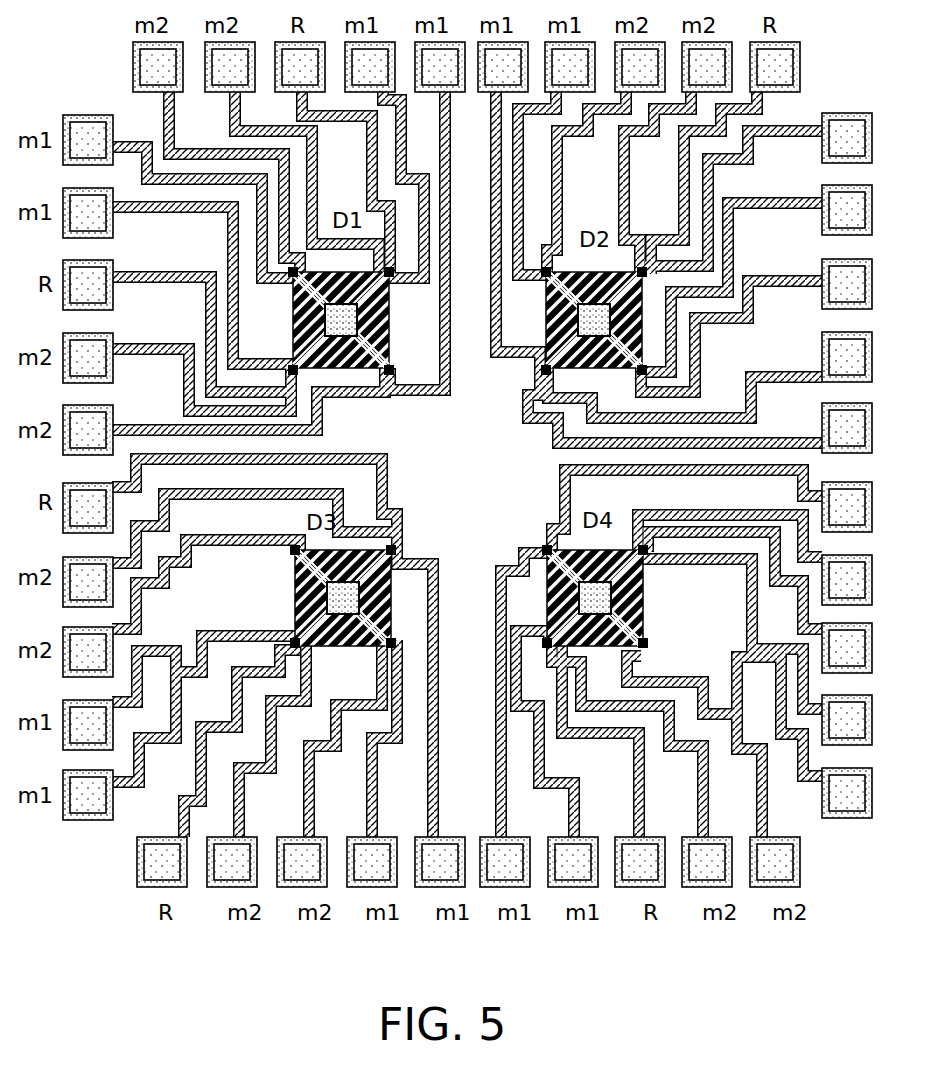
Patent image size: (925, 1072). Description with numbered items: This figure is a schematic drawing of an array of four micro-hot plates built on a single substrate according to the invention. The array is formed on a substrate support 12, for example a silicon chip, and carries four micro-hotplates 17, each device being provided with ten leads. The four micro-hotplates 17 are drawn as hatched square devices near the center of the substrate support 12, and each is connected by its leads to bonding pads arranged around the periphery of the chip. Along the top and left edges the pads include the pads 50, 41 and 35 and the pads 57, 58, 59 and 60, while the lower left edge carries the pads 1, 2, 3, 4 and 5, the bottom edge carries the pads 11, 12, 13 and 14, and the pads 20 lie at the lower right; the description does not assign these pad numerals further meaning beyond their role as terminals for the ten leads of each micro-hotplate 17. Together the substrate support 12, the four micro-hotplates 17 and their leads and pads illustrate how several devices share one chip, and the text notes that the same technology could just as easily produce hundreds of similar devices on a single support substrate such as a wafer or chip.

The bonding pads 50 is at (123, 107).
The bonding pad 41 is at (790, 67).
The bonding pad 35 is at (831, 138).
The bonding pad 57 is at (103, 215).
The bonding pad 58 is at (103, 285).
The bonding pad 59 is at (103, 358).
The bonding pad 60 is at (103, 428).
The bonding pad 1 is at (96, 508).
The bonding pad 2 is at (96, 582).
The bonding pad 3 is at (96, 652).
The bonding pad 4 is at (96, 725).
The bonding pad 5 is at (96, 795).
The bonding pad 11 is at (162, 849).
The substrate support 12 is at (484, 509).
The bonding pad 13 is at (309, 849).
The bonding pad 14 is at (377, 849).
The bonding pads 20 is at (811, 827).
The micro-hotplate 17 is at (374, 400).